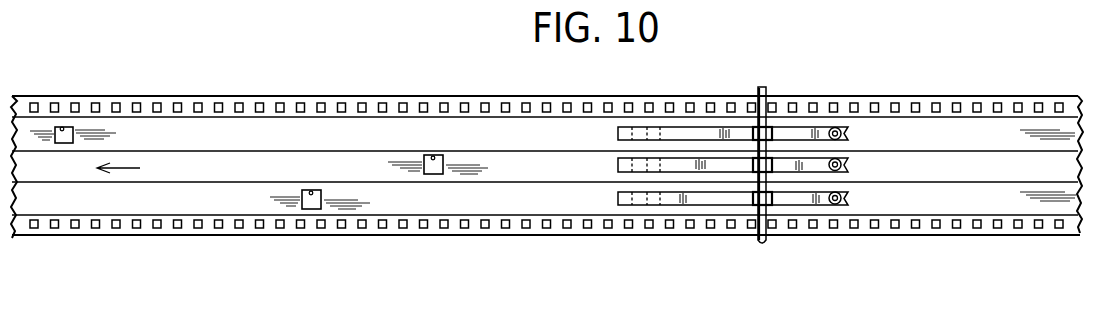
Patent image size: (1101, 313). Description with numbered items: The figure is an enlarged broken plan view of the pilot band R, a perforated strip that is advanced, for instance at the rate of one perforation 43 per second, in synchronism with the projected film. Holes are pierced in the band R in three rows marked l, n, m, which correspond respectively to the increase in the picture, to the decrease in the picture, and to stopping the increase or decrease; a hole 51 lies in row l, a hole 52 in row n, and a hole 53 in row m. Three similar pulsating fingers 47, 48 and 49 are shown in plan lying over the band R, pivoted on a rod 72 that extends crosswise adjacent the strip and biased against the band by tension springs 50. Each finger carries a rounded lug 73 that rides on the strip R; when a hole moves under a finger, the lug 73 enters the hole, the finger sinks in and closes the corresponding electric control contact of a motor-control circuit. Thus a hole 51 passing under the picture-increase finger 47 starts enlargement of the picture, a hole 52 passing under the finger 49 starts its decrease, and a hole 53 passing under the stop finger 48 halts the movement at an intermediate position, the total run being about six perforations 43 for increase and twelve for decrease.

The pilot band R is at (965, 157).
The perforation 43 is at (486, 104).
The row l is at (158, 133).
The row m is at (245, 168).
The row n is at (232, 205).
The hole 51 is at (62, 128).
The hole 52 is at (311, 192).
The hole 53 is at (434, 157).
The pulsating finger 47 is at (712, 131).
The pulsating finger 48 is at (713, 165).
The pulsating finger 49 is at (728, 198).
The rounded lug 73 is at (632, 133).
The rod 72 is at (766, 88).
The tension spring 50 is at (850, 131).